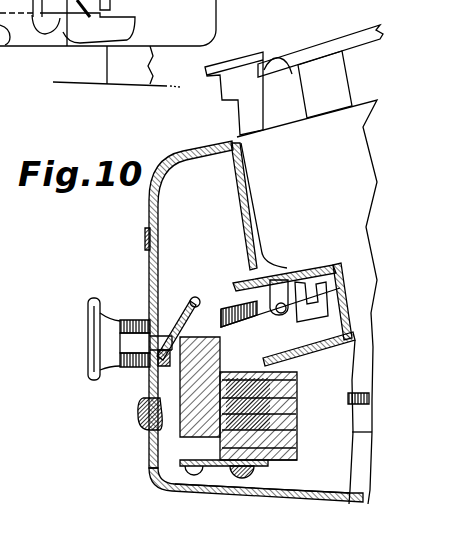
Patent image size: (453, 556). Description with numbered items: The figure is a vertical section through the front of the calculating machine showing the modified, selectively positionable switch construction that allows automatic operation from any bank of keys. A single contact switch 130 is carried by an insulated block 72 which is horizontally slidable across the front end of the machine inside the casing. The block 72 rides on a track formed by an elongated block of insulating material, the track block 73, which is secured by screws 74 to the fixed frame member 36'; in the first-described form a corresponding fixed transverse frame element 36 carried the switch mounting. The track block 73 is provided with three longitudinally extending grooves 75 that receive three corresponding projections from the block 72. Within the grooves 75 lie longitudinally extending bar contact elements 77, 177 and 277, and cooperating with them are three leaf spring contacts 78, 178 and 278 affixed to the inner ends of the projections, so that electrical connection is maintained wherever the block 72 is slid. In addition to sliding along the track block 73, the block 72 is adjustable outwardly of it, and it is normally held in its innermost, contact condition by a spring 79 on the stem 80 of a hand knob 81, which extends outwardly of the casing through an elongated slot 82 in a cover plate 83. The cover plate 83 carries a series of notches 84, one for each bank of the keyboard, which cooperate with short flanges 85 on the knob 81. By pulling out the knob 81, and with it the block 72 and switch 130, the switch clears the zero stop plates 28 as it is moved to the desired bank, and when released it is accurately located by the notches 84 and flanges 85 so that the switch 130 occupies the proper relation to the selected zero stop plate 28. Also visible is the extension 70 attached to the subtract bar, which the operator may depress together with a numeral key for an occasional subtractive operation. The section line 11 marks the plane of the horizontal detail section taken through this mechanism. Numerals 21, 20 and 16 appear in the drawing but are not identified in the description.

The extension 70 is at (337, 42).
The support bracket 21 is at (288, 77).
The housing top wall 20 is at (194, 140).
The cover plate 83 is at (146, 249).
The screws 74 is at (27, 42).
The fixed frame member 36' is at (259, 497).
The contact switch 130 is at (256, 296).
The zero stop plates 28 is at (295, 268).
The fixed transverse frame element 36 is at (303, 316).
The insulated block 72 is at (230, 338).
The grooves 75 is at (300, 358).
The block 16 is at (218, 445).
The leaf spring contact 278 is at (247, 372).
The track block 73 is at (297, 374).
The bar contact element 277 is at (297, 402).
The bar contact element 177 is at (297, 418).
The bar contact element 77 is at (297, 434).
The leaf spring contact 78 is at (302, 468).
The leaf spring contact 178 is at (268, 466).
The hand knob 81 is at (92, 380).
The flanges 85 is at (130, 320).
The notches 84 is at (125, 368).
The spring 79 is at (196, 298).
The stem 80 is at (160, 360).
The elongated slot 82 is at (148, 372).
The section line 11 is at (369, 393).